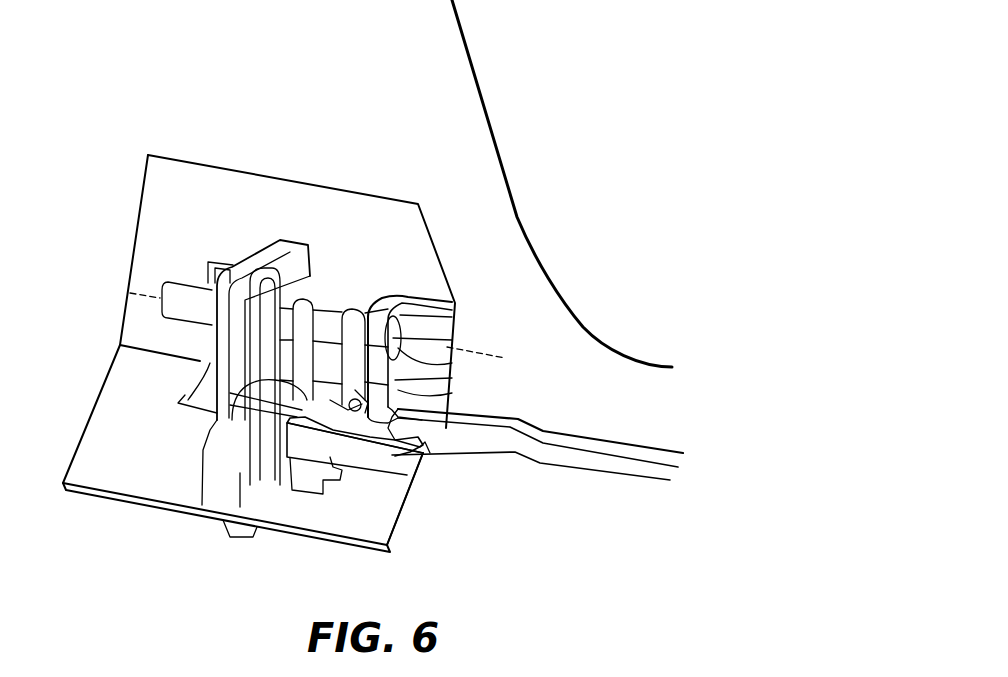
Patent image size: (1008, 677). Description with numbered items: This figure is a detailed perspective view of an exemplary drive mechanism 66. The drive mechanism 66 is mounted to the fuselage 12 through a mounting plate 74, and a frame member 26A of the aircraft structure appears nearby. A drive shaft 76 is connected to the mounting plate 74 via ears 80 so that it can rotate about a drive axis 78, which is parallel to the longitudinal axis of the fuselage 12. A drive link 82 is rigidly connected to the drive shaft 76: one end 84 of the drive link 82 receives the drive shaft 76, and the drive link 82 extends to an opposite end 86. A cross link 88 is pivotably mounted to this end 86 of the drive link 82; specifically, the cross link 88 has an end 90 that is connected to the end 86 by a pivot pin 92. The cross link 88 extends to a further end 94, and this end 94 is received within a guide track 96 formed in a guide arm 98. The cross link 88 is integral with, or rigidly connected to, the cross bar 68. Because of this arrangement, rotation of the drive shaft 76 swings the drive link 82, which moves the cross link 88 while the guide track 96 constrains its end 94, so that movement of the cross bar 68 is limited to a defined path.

The fuselage 12 is at (140, 215).
The seat frame member 26A is at (468, 78).
The drive mechanism 66 is at (302, 152).
The cross bar 68 is at (590, 458).
The mounting plate 74 is at (152, 254).
The drive shaft 76 is at (180, 305).
The drive axis 78 is at (473, 350).
The ears 80 is at (413, 258).
The drive link 82 is at (315, 330).
The end 84 is at (358, 310).
The end 86 is at (335, 400).
The cross link 88 is at (275, 405).
The end 90 is at (263, 377).
The pivot pin 92 is at (393, 467).
The end 94 is at (312, 480).
The guide track 96 is at (296, 300).
The guide arm 98 is at (245, 293).